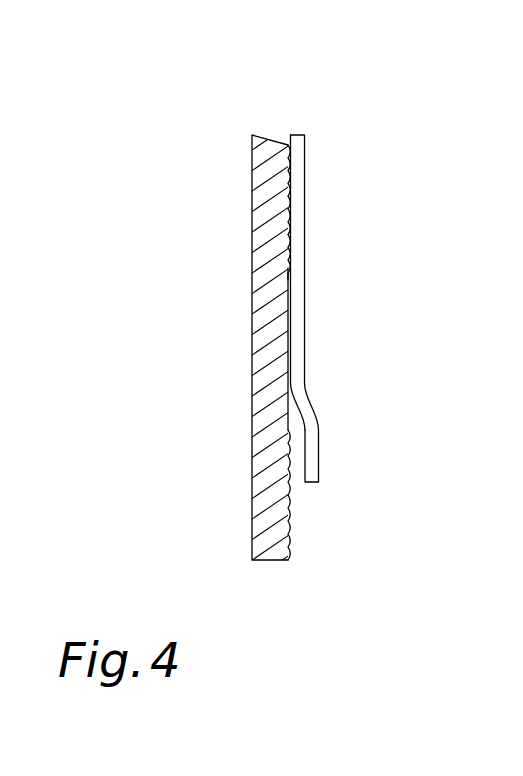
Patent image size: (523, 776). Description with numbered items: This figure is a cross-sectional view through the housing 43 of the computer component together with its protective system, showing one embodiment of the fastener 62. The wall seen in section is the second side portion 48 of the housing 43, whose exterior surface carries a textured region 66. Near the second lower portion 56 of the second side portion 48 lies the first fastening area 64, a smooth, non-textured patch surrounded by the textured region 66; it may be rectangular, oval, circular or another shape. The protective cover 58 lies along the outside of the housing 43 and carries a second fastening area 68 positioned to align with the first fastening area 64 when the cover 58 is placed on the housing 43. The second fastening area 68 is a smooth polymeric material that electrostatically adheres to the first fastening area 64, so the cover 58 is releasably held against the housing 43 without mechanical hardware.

The housing 43 is at (281, 110).
The second side portion 48 is at (252, 213).
The second lower portion 56 is at (258, 450).
The protective cover 58 is at (318, 455).
The fastener 62 is at (324, 345).
The first fastening area 64 is at (294, 273).
The textured region 66 is at (293, 193).
The second fastening area 68 is at (282, 347).